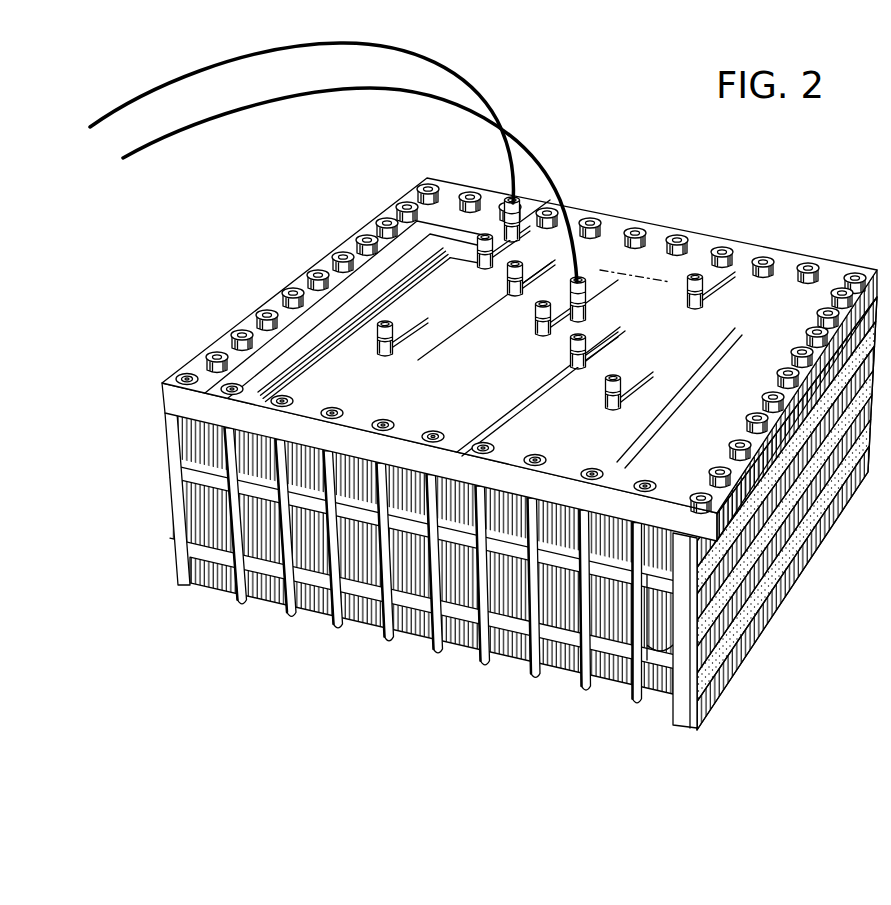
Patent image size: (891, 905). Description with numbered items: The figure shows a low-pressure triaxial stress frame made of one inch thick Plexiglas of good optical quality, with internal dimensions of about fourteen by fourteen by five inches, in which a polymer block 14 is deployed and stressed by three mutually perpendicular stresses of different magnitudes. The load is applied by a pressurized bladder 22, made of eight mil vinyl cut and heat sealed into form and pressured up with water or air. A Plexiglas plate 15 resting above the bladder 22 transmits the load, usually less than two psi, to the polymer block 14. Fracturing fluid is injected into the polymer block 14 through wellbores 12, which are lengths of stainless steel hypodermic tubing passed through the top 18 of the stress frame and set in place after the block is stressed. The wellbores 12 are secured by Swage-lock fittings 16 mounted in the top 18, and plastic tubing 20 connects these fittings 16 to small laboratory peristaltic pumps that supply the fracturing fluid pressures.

The wellbores 12 is at (452, 352).
The polymer block 14 is at (667, 573).
The Plexiglas plate 15 is at (667, 635).
The Swage-lock fittings 16 is at (497, 218).
The top of the triaxial stress frame 18 is at (703, 534).
The plastic tubing 20 is at (207, 63).
The pressurized bladder 22 is at (270, 565).